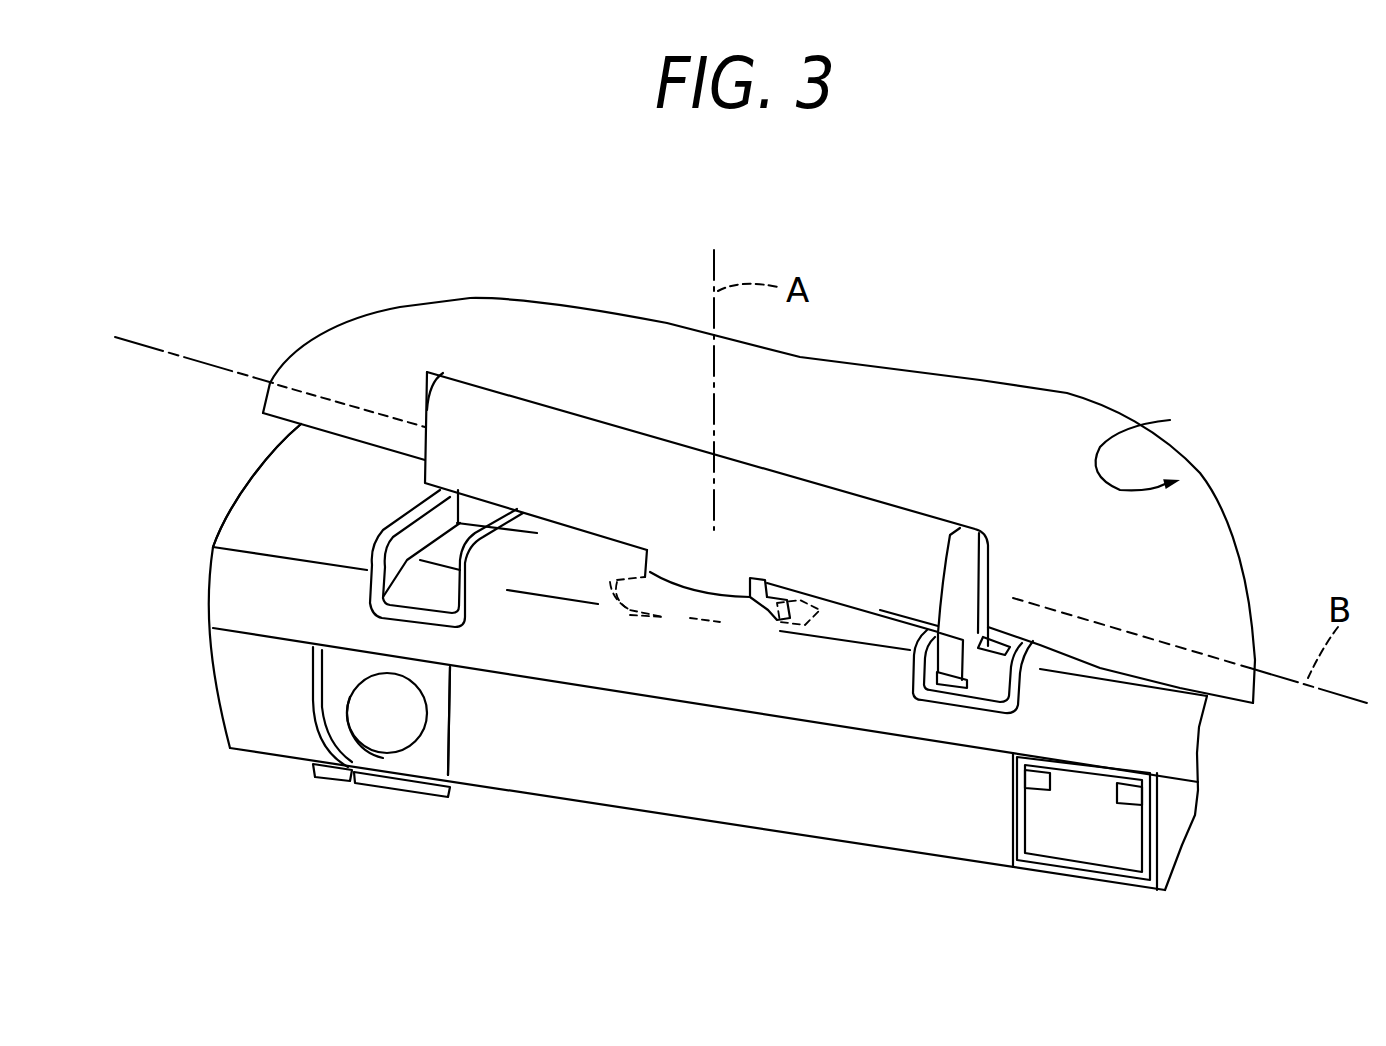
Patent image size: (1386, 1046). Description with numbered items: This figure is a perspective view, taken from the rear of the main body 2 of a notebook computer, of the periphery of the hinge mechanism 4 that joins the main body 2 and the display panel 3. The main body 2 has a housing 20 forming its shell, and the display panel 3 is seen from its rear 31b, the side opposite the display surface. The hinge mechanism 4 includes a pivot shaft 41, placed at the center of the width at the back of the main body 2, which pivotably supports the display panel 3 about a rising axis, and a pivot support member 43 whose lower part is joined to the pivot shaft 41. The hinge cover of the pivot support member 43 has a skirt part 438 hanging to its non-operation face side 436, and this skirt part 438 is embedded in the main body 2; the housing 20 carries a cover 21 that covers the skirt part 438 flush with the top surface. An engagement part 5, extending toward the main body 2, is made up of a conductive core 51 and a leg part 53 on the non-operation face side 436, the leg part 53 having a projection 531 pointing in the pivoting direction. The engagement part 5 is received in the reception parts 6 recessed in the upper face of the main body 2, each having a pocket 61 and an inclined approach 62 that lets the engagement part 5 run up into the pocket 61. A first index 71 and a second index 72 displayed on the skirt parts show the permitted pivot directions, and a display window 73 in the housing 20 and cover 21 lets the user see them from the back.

The main body 2 is at (231, 577).
The display panel 3 is at (973, 420).
The hinge mechanism 4 is at (706, 547).
The engagement part 5 is at (990, 632).
The reception parts 6 is at (671, 707).
The housing 20 is at (277, 480).
The cover 21 is at (507, 663).
The rear 31b is at (1166, 445).
The pivot shaft 41 is at (627, 563).
The pivot support member 43 is at (498, 417).
The core 51 is at (1010, 647).
The leg part 53 is at (936, 632).
The pocket 61 is at (457, 548).
The approach 62 is at (417, 590).
The first index 71 is at (700, 627).
The second index 72 is at (657, 620).
The display window 73 is at (750, 617).
The non-operation face side 436 is at (890, 607).
The skirt part 438 is at (617, 607).
The projection 531 is at (933, 688).